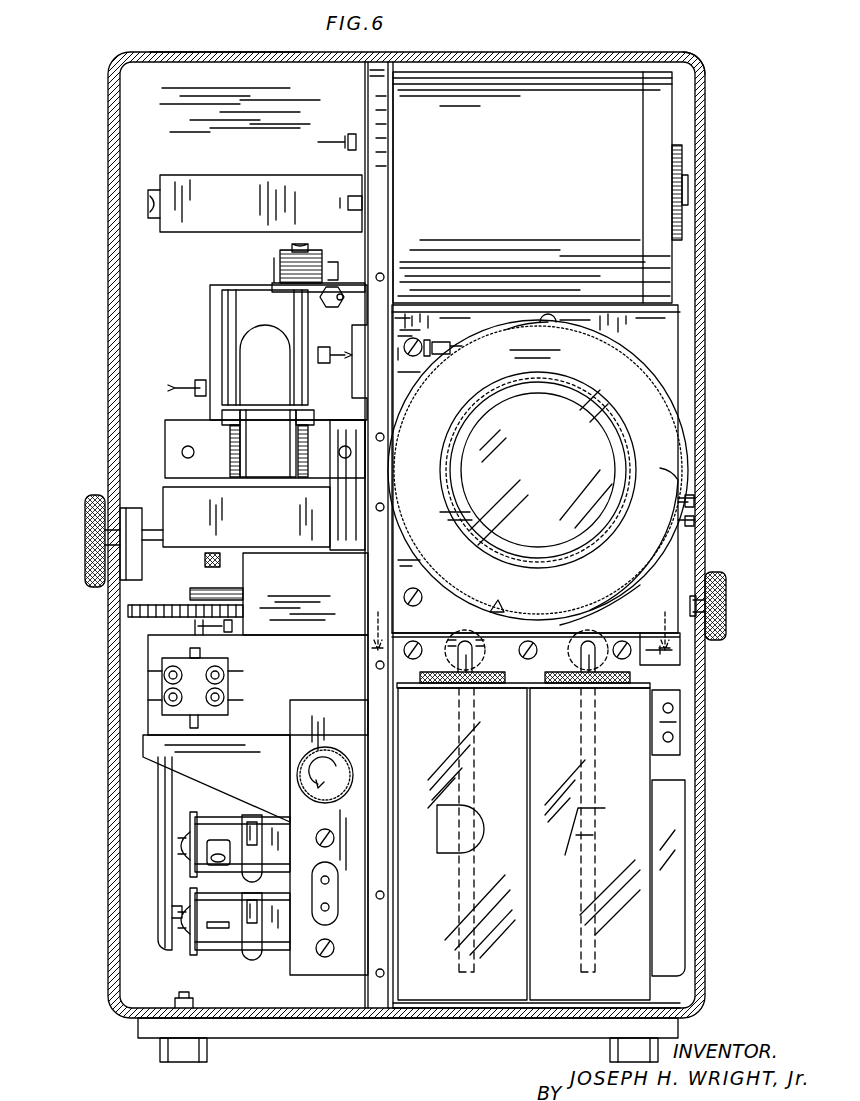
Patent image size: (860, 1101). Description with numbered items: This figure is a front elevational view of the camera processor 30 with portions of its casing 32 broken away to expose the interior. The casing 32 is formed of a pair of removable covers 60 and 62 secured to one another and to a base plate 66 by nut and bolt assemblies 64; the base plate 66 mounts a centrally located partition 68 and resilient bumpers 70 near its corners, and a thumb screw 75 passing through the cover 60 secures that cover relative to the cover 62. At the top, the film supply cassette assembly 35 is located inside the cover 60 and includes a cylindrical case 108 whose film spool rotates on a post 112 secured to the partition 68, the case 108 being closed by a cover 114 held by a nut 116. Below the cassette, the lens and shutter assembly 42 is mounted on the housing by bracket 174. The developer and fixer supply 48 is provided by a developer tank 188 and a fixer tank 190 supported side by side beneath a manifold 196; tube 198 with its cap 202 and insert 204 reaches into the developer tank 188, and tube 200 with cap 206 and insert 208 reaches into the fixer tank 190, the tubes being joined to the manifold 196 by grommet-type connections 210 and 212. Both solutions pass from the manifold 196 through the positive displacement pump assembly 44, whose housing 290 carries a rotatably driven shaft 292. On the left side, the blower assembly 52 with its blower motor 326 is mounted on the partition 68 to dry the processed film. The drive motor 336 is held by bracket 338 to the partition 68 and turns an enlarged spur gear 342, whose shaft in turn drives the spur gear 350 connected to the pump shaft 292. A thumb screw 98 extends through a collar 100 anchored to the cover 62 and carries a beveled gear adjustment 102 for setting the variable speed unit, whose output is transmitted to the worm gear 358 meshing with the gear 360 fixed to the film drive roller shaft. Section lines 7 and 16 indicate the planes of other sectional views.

The camera processor 30 is at (60, 78).
The casing 32 is at (100, 126).
The film supply cassette assembly 35 is at (494, 64).
The lens and shutter assembly 42 is at (665, 446).
The pump assembly 44 is at (126, 703).
The developer and fixer supply 48 is at (510, 1058).
The blower assembly 52 is at (152, 451).
The housing cover 60 is at (696, 58).
The housing cover 62 is at (196, 52).
The nut and bolt assemblies 64 is at (196, 990).
The base plate 66 is at (276, 1042).
The partition 68 is at (374, 990).
The resilient bumpers 70 is at (204, 1048).
The thumb screw 75 is at (727, 614).
The thumb screw 98 is at (84, 540).
The collar 100 is at (140, 572).
The beveled gear adjustment 102 is at (228, 580).
The cylindrical case 108 is at (482, 142).
The post 112 is at (688, 194).
The cover 114 is at (673, 124).
The nut 116 is at (682, 163).
The bracket 174 is at (668, 332).
The tank 188 is at (418, 1000).
The tank 190 is at (642, 986).
The manifold 196 is at (628, 658).
The tube 198 is at (476, 658).
The tube 200 is at (590, 658).
The cap 202 is at (458, 658).
The insert 204 is at (430, 684).
The cap 206 is at (550, 684).
The insert 208 is at (588, 688).
The grommet-type connection 210 is at (462, 640).
The grommet-type connection 212 is at (598, 640).
The housing 290 is at (148, 660).
The shaft 292 is at (186, 598).
The blower motor 326 is at (232, 318).
The motor 336 is at (162, 884).
The bracket 338 is at (158, 758).
The spur gear 342 is at (270, 580).
The spur gear 350 is at (127, 608).
The worm gear 358 is at (283, 258).
The gear 360 is at (300, 246).
The section line 7- 7 is at (534, 12).
The section line 16- 16 is at (525, 631).